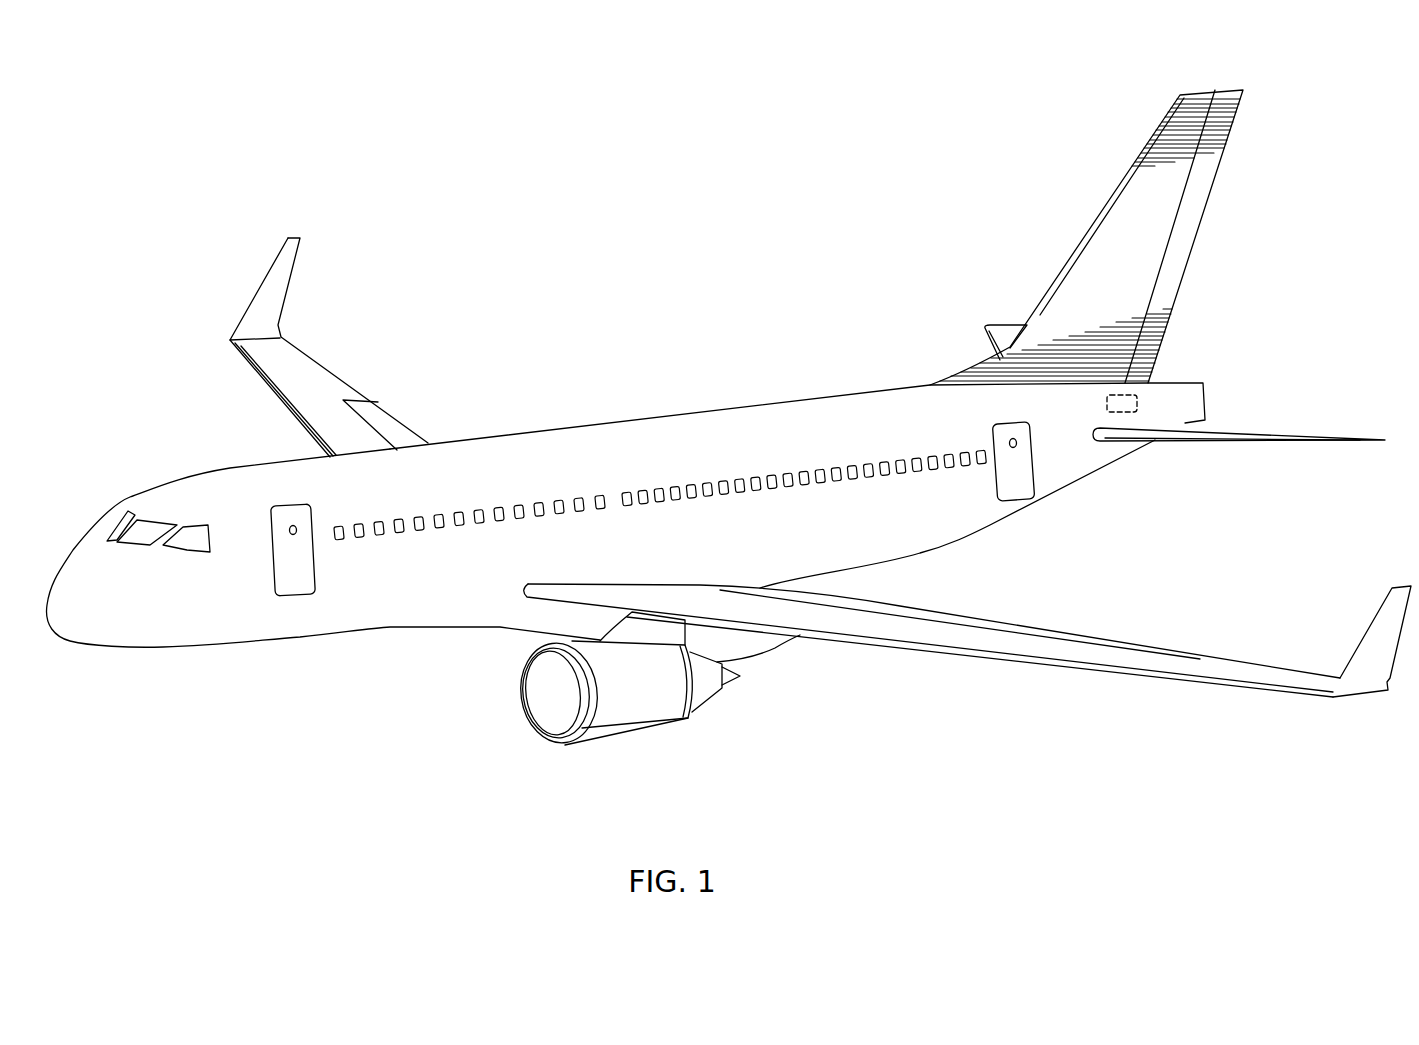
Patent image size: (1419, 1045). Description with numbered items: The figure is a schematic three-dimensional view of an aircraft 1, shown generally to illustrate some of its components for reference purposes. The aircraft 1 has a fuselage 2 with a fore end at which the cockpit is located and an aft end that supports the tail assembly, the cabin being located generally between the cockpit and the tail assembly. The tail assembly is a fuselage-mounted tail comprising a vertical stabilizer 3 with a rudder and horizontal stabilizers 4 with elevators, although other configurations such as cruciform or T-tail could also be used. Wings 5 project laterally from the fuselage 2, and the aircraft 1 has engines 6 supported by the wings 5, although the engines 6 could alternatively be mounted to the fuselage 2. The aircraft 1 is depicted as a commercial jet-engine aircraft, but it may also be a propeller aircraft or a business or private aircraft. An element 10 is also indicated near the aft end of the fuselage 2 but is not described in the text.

The aircraft 1 is at (596, 332).
The fuselage 2 is at (372, 598).
The vertical stabilizer 3 is at (1120, 232).
The horizontal stabilizers 4 is at (1003, 342).
The wings 5 is at (313, 390).
The engines 6 is at (673, 707).
The auxiliary power unit 10 is at (1130, 405).